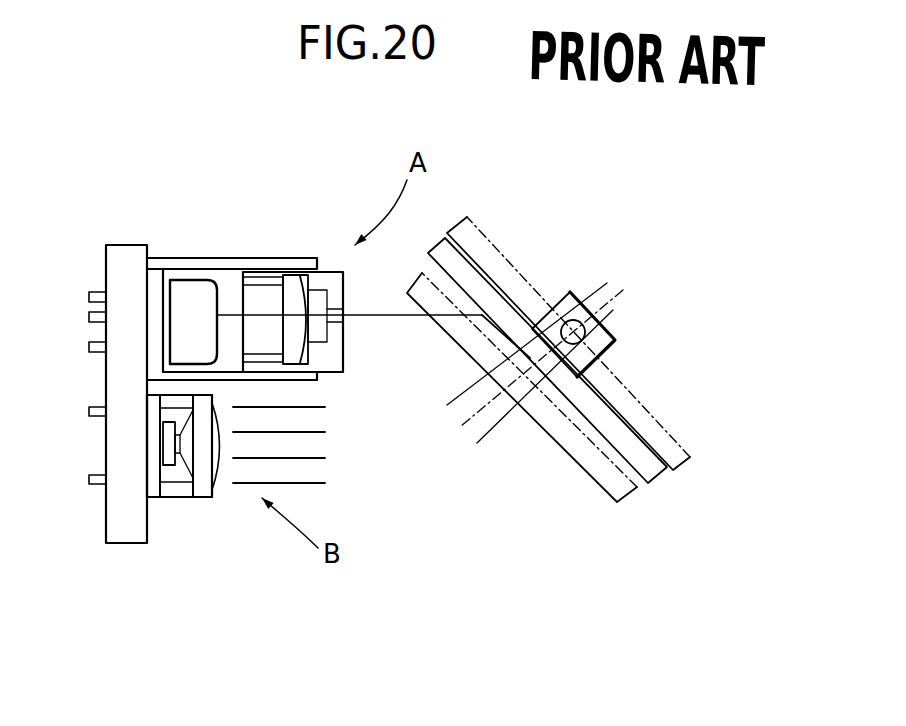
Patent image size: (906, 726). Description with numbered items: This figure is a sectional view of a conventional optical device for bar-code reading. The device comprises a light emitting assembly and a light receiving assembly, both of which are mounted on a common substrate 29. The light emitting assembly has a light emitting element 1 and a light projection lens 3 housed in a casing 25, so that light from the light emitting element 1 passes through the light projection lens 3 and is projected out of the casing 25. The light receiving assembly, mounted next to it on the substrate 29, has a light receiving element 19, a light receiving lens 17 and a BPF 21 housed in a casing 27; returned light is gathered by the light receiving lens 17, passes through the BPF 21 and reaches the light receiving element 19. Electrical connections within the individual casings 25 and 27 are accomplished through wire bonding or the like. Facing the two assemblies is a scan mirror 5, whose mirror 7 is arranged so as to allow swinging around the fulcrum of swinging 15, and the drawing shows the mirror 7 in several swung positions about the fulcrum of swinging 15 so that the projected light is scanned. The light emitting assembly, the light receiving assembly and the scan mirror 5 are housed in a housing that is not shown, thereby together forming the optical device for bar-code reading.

The light emitting element 1 is at (188, 339).
The light projection lens 3 is at (330, 262).
The scan mirror 5 is at (677, 387).
The mirror 7 is at (658, 480).
The fulcrum of swinging 15 is at (573, 320).
The light receiving lens 17 is at (219, 472).
The light receiving element 19 is at (178, 497).
The BPF 21 is at (205, 497).
The casing 25 is at (208, 257).
The casing 27 is at (157, 497).
The substrate 29 is at (106, 497).